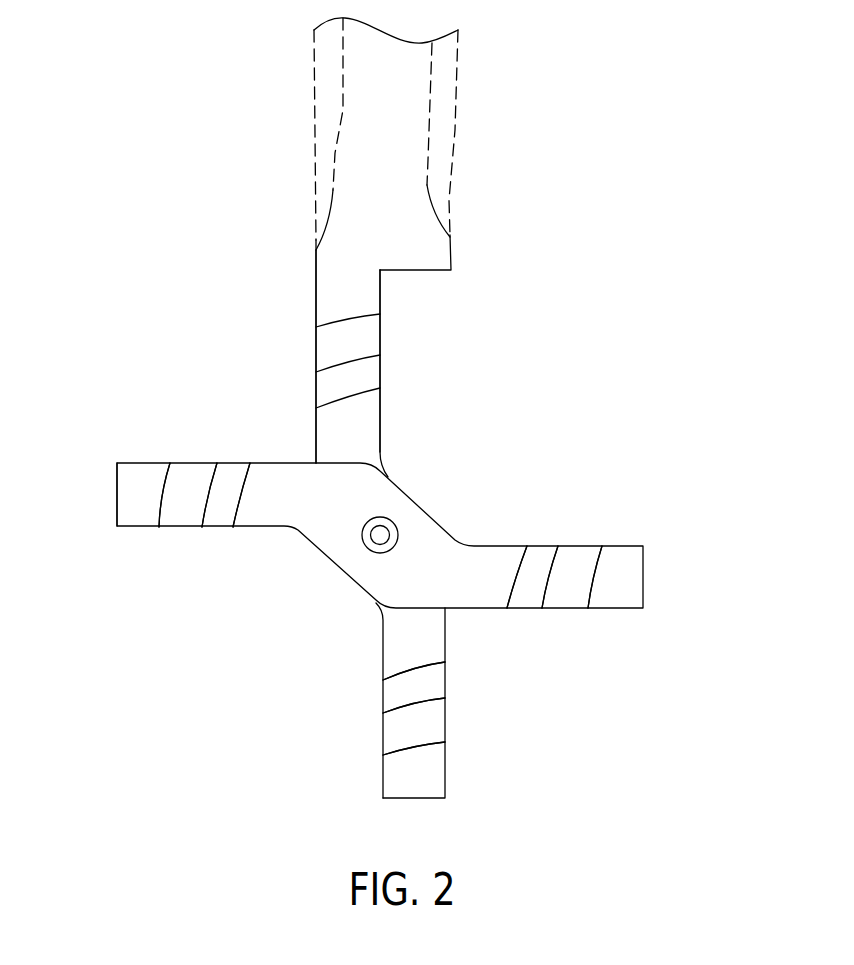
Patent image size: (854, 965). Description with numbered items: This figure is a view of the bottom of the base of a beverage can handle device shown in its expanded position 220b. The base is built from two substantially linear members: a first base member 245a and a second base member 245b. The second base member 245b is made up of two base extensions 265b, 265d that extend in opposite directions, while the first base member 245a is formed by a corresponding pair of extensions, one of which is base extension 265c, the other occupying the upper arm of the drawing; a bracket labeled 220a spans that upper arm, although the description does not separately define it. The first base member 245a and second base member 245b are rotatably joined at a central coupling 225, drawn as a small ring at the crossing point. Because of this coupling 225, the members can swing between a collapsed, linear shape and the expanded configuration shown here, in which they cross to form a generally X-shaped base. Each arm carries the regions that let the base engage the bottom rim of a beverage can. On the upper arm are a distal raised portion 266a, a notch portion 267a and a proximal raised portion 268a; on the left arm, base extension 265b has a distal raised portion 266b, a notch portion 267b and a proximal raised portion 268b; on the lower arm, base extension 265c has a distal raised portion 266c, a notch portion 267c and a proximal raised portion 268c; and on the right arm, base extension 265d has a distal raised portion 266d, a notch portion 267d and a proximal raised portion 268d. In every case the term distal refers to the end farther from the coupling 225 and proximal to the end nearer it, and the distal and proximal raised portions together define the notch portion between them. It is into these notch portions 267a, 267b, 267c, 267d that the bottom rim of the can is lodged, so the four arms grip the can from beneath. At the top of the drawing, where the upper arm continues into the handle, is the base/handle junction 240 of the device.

The first section 220a is at (463, 272).
The expanded position 220b is at (682, 625).
The coupling 225 is at (378, 538).
The base/handle junction 240 is at (428, 239).
The first base member 245a is at (332, 292).
The second base member 245b is at (125, 504).
The base extension 265b is at (117, 408).
The base extension 265c is at (280, 607).
The base extension 265d is at (453, 662).
The distal raised portion 266a is at (360, 293).
The distal raised portion 266b is at (153, 477).
The distal raised portion 266c is at (402, 783).
The distal raised portion 266d is at (629, 560).
The notch portion 267a is at (360, 337).
The notch portion 267b is at (178, 512).
The notch portion 267c is at (402, 740).
The notch portion 267d is at (570, 593).
The proximal raised portion 268a is at (360, 377).
The proximal raised portion 268b is at (238, 478).
The proximal raised portion 268c is at (402, 698).
The proximal raised portion 268d is at (543, 560).